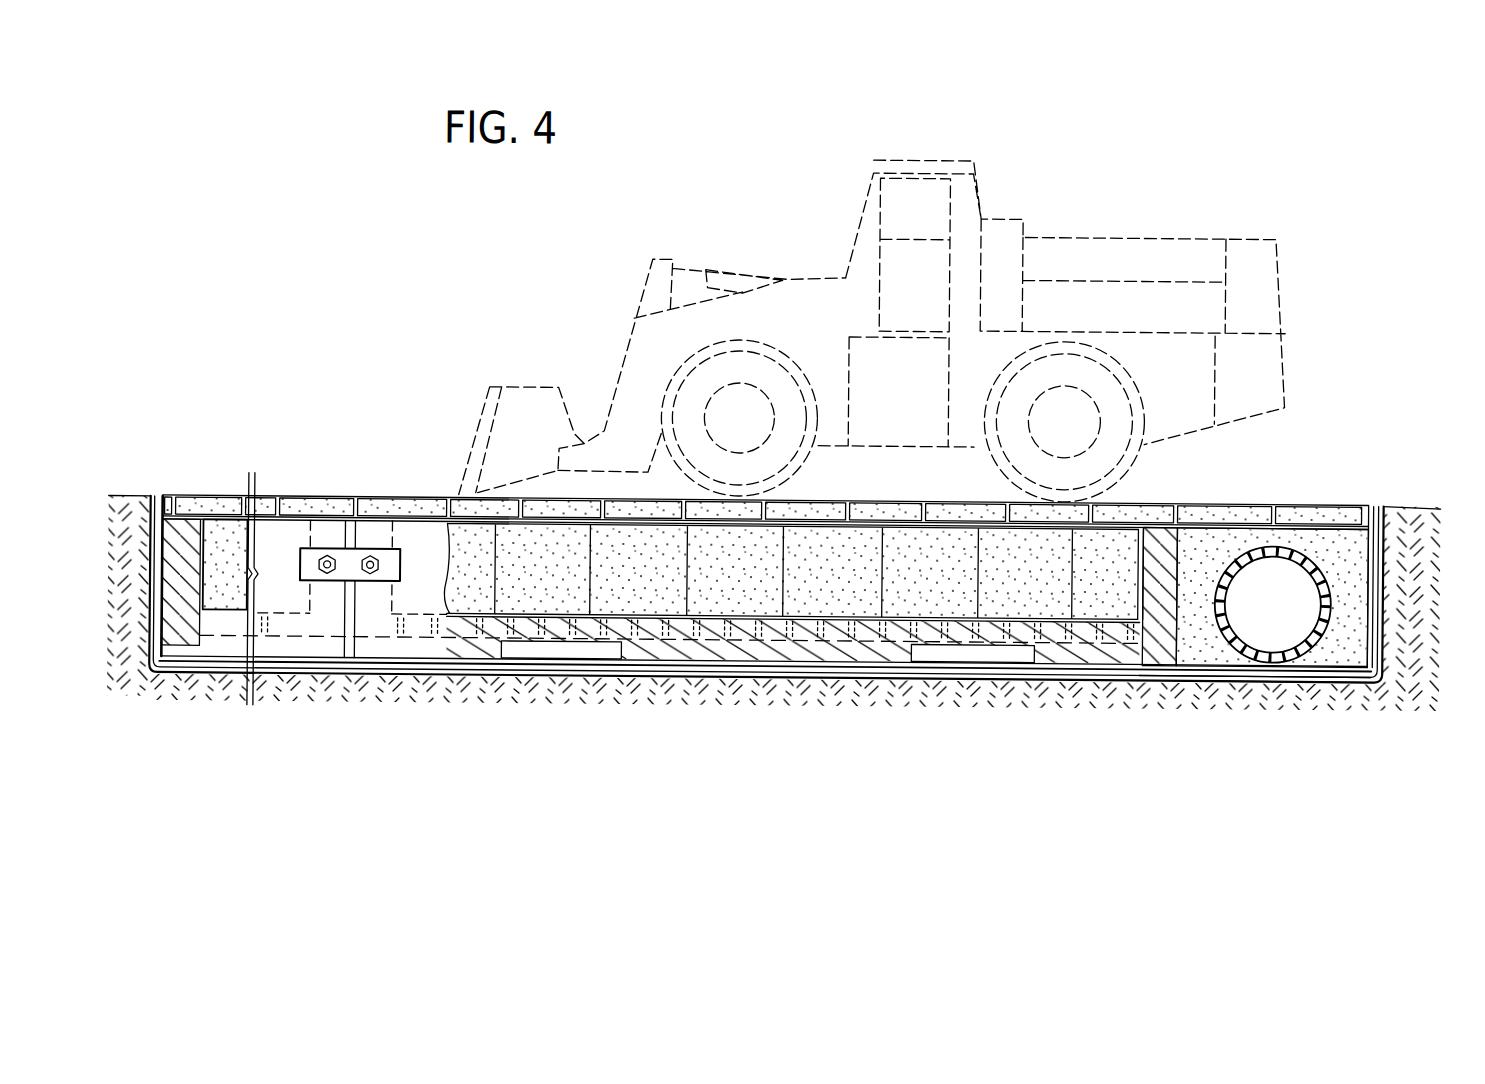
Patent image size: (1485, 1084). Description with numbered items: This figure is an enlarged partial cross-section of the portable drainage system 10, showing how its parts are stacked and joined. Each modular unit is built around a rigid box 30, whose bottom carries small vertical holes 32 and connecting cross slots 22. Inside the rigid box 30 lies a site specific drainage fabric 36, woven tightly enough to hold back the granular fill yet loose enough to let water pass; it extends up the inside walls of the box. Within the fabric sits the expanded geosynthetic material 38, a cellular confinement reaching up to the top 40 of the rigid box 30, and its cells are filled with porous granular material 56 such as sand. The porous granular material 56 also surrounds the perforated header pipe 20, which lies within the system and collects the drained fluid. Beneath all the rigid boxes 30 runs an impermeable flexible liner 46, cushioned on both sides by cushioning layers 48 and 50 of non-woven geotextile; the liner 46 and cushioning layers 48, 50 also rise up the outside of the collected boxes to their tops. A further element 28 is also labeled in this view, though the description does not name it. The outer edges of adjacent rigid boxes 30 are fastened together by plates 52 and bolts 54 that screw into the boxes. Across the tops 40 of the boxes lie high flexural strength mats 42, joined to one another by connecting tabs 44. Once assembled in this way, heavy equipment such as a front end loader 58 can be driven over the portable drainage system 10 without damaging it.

The portable drainage system 10 is at (200, 428).
The perforated header pipe 20 is at (1330, 582).
The connecting cross slots 22 is at (973, 655).
The surrounding soil / excavation 28 is at (1177, 627).
The rigid box 30 is at (1178, 568).
The small vertical holes 32 is at (866, 664).
The site specific drainage fabric 36 is at (623, 605).
The expanded geosynthetic material 38 is at (973, 561).
The top of the rigid box 40 is at (1143, 525).
The high flexural strength mat 42 is at (293, 501).
The connecting tabs 44 is at (818, 633).
The impermeable flexible liner 46 is at (1117, 665).
The cushioning layer 48 is at (1043, 669).
The cushioning layer 50 is at (1273, 673).
The plates 52 is at (341, 588).
The bolts 54 is at (317, 585).
The porous granular material 56 is at (733, 594).
The front end loader 58 is at (1110, 232).